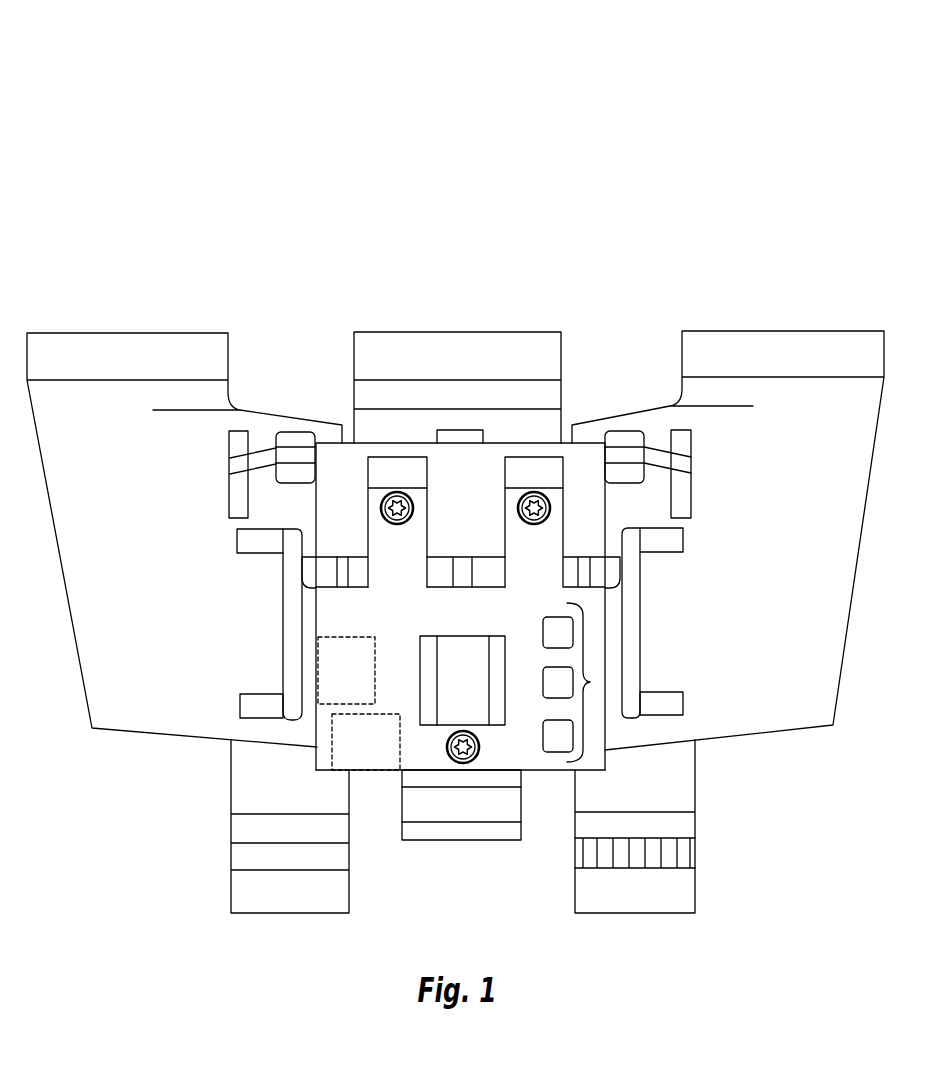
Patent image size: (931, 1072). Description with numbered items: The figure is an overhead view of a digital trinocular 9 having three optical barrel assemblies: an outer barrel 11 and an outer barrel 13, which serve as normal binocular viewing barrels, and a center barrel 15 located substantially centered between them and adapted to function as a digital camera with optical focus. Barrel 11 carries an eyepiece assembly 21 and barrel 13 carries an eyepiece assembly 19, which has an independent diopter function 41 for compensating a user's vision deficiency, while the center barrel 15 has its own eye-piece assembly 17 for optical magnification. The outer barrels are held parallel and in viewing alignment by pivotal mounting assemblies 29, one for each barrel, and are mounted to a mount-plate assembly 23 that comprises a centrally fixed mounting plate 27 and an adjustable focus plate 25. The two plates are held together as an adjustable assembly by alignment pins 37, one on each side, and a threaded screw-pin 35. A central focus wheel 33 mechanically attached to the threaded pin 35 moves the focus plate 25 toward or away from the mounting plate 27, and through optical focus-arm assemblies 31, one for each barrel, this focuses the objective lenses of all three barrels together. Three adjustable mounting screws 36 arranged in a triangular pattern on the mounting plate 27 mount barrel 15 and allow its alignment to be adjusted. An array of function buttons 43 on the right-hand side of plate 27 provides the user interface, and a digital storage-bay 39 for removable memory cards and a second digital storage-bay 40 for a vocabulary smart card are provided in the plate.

The digital trinocular 9 is at (444, 175).
The barrel 11 is at (177, 322).
The barrel 13 is at (782, 325).
The barrel 15 is at (460, 328).
The eye-piece assembly 17 is at (459, 843).
The eyepiece assembly 19 is at (698, 898).
The eyepiece assembly 21 is at (216, 893).
The mount-plate assembly 23 is at (214, 525).
The focus plate 25 is at (474, 498).
The mounting plate 27 is at (384, 664).
The pivotal mounting assembly 29 is at (282, 645).
The optical focus-arm assembly 31 is at (215, 468).
The central focus wheel 33 is at (465, 635).
The threaded screw-pin 35 is at (460, 588).
The adjustable mounting screws 36 is at (446, 746).
The alignment pins 37 is at (348, 568).
The digital storage-bay 39 is at (325, 746).
The second digital storage-bay 40 is at (313, 670).
The diopter function 41 is at (697, 856).
The function buttons 43 is at (592, 681).